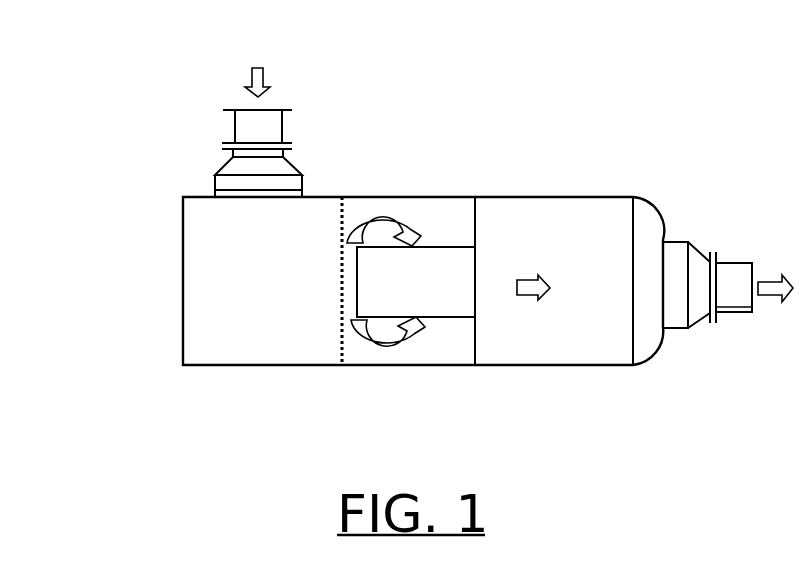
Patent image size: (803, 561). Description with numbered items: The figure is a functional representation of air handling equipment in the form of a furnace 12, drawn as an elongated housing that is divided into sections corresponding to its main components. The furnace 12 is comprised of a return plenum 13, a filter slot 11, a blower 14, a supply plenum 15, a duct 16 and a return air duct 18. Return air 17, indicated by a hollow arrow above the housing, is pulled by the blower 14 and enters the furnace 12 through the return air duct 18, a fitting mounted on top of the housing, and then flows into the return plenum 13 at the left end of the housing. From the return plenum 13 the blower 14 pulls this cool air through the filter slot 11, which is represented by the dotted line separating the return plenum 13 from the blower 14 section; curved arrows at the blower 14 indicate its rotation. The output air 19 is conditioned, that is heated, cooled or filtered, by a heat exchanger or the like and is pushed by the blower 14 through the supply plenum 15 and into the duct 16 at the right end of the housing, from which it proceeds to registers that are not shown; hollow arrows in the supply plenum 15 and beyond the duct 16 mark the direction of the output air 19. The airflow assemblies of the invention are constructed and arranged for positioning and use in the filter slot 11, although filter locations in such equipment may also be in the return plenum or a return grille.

The filter slot 11 is at (341, 190).
The furnace 12 is at (503, 180).
The return plenum 13 is at (220, 227).
The blower 14 is at (419, 293).
The supply plenum 15 is at (572, 230).
The duct 16 is at (733, 278).
The return air 17 is at (250, 80).
The return air duct 18 is at (270, 130).
The output air 19 is at (530, 288).